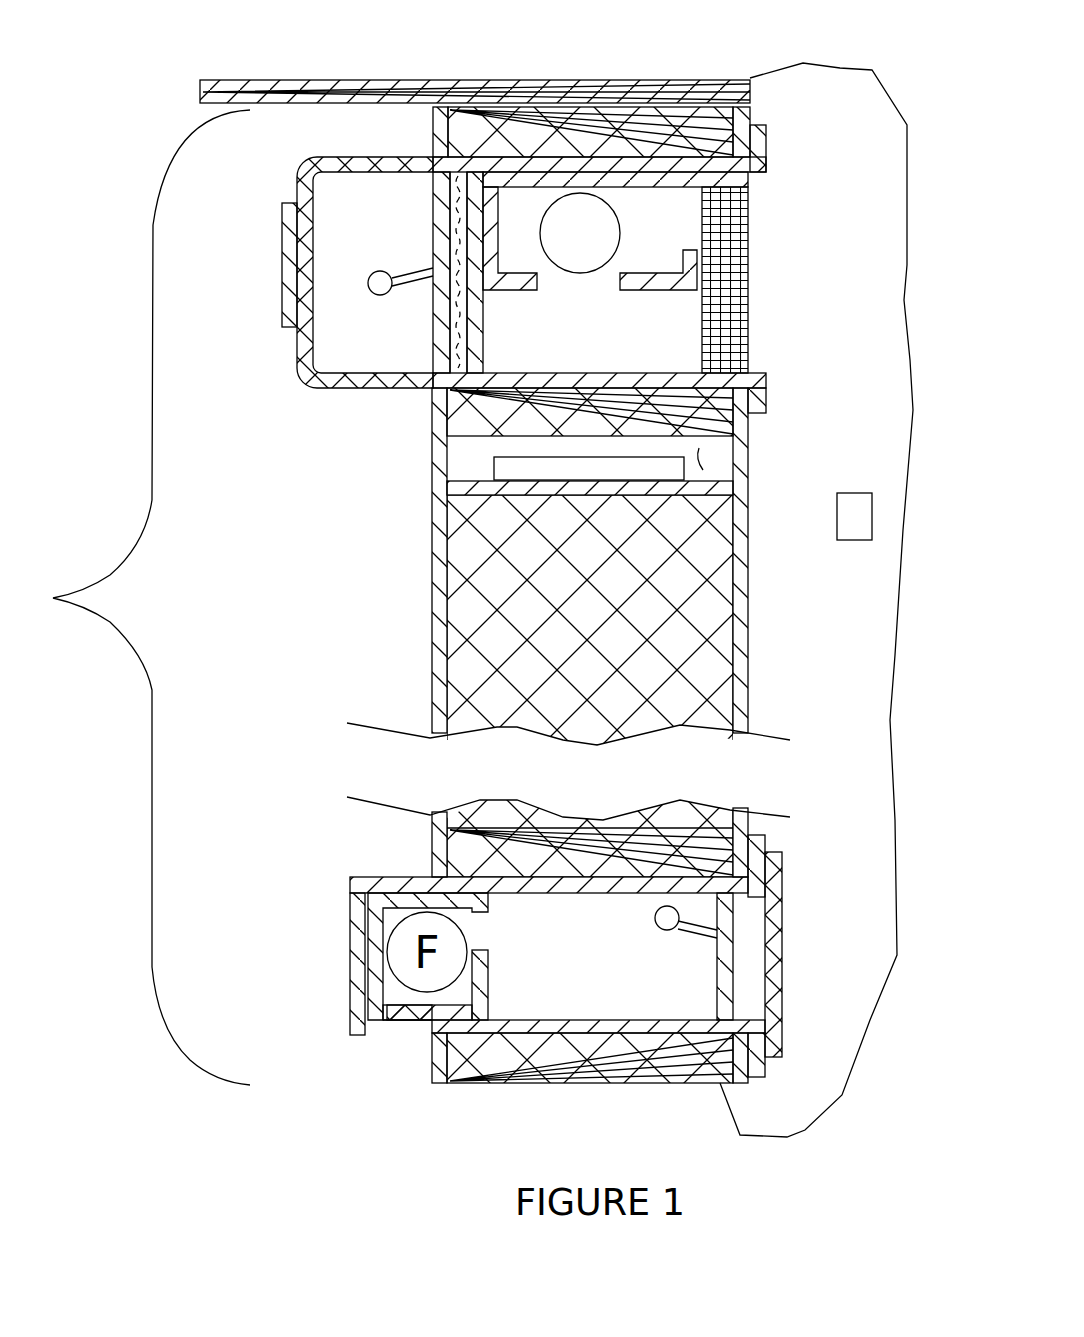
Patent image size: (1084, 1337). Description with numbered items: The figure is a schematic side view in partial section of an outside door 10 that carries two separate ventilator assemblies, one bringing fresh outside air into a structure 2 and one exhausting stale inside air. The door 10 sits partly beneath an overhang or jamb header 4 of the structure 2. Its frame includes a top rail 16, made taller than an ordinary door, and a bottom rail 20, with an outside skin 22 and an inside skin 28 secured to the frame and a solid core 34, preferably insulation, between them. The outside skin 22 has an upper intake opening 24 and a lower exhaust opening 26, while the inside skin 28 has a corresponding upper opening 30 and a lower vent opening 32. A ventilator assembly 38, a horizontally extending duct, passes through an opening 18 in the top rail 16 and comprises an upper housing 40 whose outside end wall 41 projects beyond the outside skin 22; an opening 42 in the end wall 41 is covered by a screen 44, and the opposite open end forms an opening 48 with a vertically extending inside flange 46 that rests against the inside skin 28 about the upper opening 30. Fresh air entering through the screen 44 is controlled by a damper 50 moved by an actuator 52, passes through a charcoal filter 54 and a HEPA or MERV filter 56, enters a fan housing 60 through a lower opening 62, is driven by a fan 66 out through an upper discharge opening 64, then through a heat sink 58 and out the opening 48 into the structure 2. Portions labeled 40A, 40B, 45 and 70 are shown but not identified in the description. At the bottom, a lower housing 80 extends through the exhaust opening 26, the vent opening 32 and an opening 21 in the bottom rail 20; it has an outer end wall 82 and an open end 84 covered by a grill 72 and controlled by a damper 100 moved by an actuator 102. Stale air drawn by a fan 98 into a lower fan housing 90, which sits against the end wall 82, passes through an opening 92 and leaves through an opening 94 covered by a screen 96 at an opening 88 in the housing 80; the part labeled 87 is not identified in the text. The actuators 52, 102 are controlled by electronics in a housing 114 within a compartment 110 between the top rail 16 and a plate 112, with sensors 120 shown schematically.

The structure 2 is at (877, 105).
The overhang or jamb header 4 is at (363, 90).
The outside door 10 is at (128, 510).
The top rail 16 is at (700, 115).
The opening 18 is at (680, 372).
The bottom rail 20 is at (707, 1060).
The opening 21 is at (590, 1040).
The outside skin 22 is at (432, 690).
The upper intake opening 24 is at (428, 382).
The lower exhaust opening 26 is at (452, 1004).
The inside skin 28 is at (746, 567).
The upper opening 30 is at (766, 380).
The lower vent opening 32 is at (748, 893).
The solid core 34 is at (673, 627).
The ventilator assembly 38 is at (752, 298).
The upper housing 40 is at (295, 338).
The pocket top wall 40A is at (327, 158).
The top insulation 40B is at (540, 120).
The outside end wall 41 is at (325, 362).
The opening 42 is at (297, 302).
The screen 44 is at (313, 272).
The top board joint 45 is at (433, 160).
The inside flange 46 is at (765, 130).
The opening 48 is at (720, 175).
The damper 50 is at (433, 187).
The actuator 52 is at (387, 272).
The filter 54 is at (455, 322).
The filter 56 is at (455, 362).
The heat sink 58 is at (725, 245).
The fan housing 60 is at (502, 291).
The lower opening 62 is at (520, 291).
The upper fan housing discharge opening 64 is at (692, 250).
The fan 66 is at (597, 270).
The side flange 70 is at (282, 230).
The grill 72 is at (782, 927).
The lower housing 80 is at (348, 897).
The outer end wall 82 is at (350, 962).
The open end 84 is at (742, 1012).
The lower board 87 is at (540, 1020).
The opening 88 is at (377, 1034).
The fan housing 90 is at (368, 925).
The opening 92 is at (481, 950).
The opening 94 is at (397, 1022).
The screen 96 is at (427, 1021).
The fan 98 is at (423, 912).
The damper 100 is at (717, 980).
The actuator 102 is at (659, 932).
The compartment 110 is at (705, 458).
The plate 112 is at (447, 486).
The housing 114 is at (487, 466).
The sensors 120 is at (855, 493).